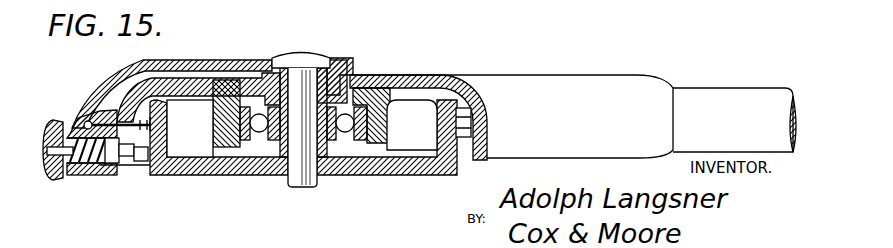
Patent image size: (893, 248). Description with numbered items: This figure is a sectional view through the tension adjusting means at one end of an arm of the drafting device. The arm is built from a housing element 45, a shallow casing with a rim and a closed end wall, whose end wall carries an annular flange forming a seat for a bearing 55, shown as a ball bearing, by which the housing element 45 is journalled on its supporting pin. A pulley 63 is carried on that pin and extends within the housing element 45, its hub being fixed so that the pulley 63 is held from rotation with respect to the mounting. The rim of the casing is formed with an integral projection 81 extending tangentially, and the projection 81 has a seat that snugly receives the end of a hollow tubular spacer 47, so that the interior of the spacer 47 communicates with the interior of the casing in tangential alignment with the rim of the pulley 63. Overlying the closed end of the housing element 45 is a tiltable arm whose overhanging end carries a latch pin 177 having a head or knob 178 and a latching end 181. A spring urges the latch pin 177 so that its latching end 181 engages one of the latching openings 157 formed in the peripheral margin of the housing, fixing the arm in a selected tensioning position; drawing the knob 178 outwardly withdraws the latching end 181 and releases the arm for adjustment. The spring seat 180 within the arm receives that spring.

The latch pin 177 is at (72, 127).
The head or knob 178 is at (53, 181).
The spring housing 180 is at (93, 176).
The latching openings 157 is at (134, 165).
The latching end 181 is at (167, 170).
The bearing 55 is at (347, 150).
The pulley 63 is at (424, 174).
The housing element 45 is at (414, 91).
The projections 81 is at (545, 85).
The hollow tubular spacer 47 is at (723, 95).